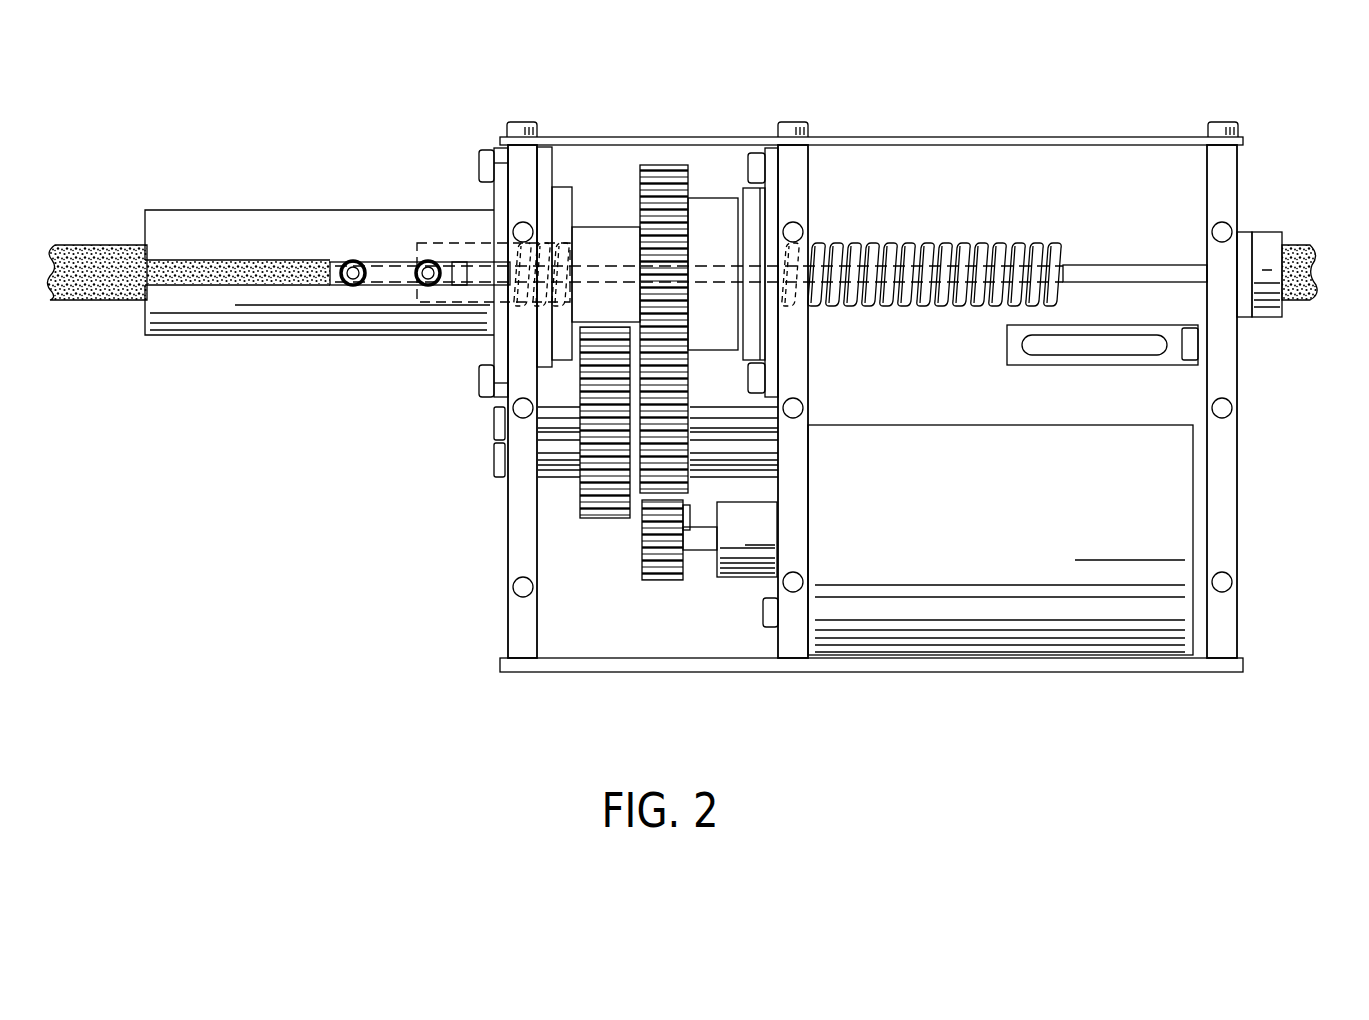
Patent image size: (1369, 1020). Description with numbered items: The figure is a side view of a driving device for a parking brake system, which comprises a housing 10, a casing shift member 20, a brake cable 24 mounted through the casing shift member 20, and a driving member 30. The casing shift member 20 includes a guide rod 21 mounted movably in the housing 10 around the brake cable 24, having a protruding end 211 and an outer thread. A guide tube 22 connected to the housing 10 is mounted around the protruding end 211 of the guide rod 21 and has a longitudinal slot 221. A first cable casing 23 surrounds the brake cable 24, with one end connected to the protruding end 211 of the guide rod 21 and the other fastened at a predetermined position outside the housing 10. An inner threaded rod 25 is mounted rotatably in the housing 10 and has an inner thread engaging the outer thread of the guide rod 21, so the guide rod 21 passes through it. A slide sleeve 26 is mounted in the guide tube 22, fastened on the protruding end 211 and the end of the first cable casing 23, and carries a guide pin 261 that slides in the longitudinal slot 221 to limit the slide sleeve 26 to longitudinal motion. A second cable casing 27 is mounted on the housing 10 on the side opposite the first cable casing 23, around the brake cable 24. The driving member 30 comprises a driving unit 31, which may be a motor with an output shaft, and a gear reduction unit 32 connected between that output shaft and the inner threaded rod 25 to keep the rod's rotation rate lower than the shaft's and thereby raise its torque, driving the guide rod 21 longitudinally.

The housing 10 is at (938, 108).
The casing shift member 20 is at (308, 308).
The guide rod 21 is at (942, 246).
The protruding end 211 is at (481, 272).
The guide tube 22 is at (182, 226).
The longitudinal slot 221 is at (172, 283).
The first cable casing 23 is at (85, 252).
The brake cable 24 is at (1090, 272).
The inner threaded rod 25 is at (608, 245).
The slide sleeve 26 is at (378, 276).
The guide pin 261 is at (351, 288).
The second cable casing 27 is at (1300, 252).
The driving member 30 is at (886, 527).
The driving unit 31 is at (963, 648).
The gear reduction unit 32 is at (620, 558).